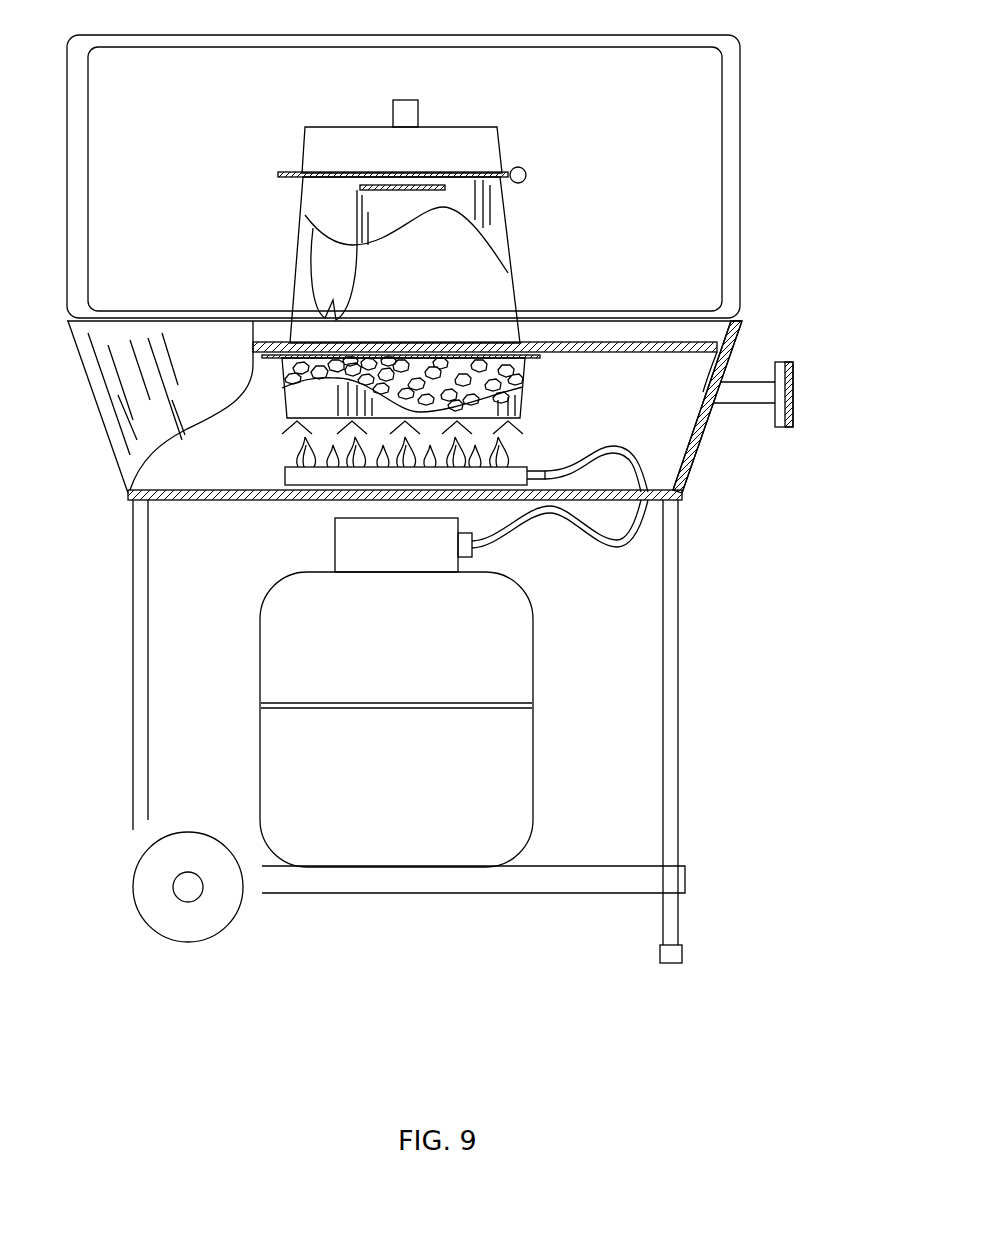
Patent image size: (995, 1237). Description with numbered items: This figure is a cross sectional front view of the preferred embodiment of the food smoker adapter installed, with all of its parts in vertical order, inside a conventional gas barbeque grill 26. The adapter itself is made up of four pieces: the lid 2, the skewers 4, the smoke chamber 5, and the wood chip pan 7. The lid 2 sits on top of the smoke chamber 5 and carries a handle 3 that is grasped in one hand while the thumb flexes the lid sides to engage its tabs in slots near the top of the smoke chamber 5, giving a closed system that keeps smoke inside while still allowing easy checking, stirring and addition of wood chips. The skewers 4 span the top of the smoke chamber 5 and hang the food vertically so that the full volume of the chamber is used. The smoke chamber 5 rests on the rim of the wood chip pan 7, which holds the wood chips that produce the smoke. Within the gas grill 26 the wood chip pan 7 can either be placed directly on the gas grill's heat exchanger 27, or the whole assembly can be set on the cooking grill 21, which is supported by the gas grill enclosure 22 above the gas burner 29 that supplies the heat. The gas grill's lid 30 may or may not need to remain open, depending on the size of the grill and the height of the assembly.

The lid 30 is at (745, 35).
The gas barbeque grill 26 is at (772, 195).
The lid 2 is at (473, 126).
The handle 3 is at (418, 101).
The skewers 4 is at (528, 170).
The smoke chamber 5 is at (510, 232).
The cooking grill 21 is at (563, 345).
The wood chip pan 7 is at (548, 381).
The heat exchanger 27 is at (553, 425).
The gas burner 29 is at (278, 467).
The gas grill enclosure 22 is at (703, 445).